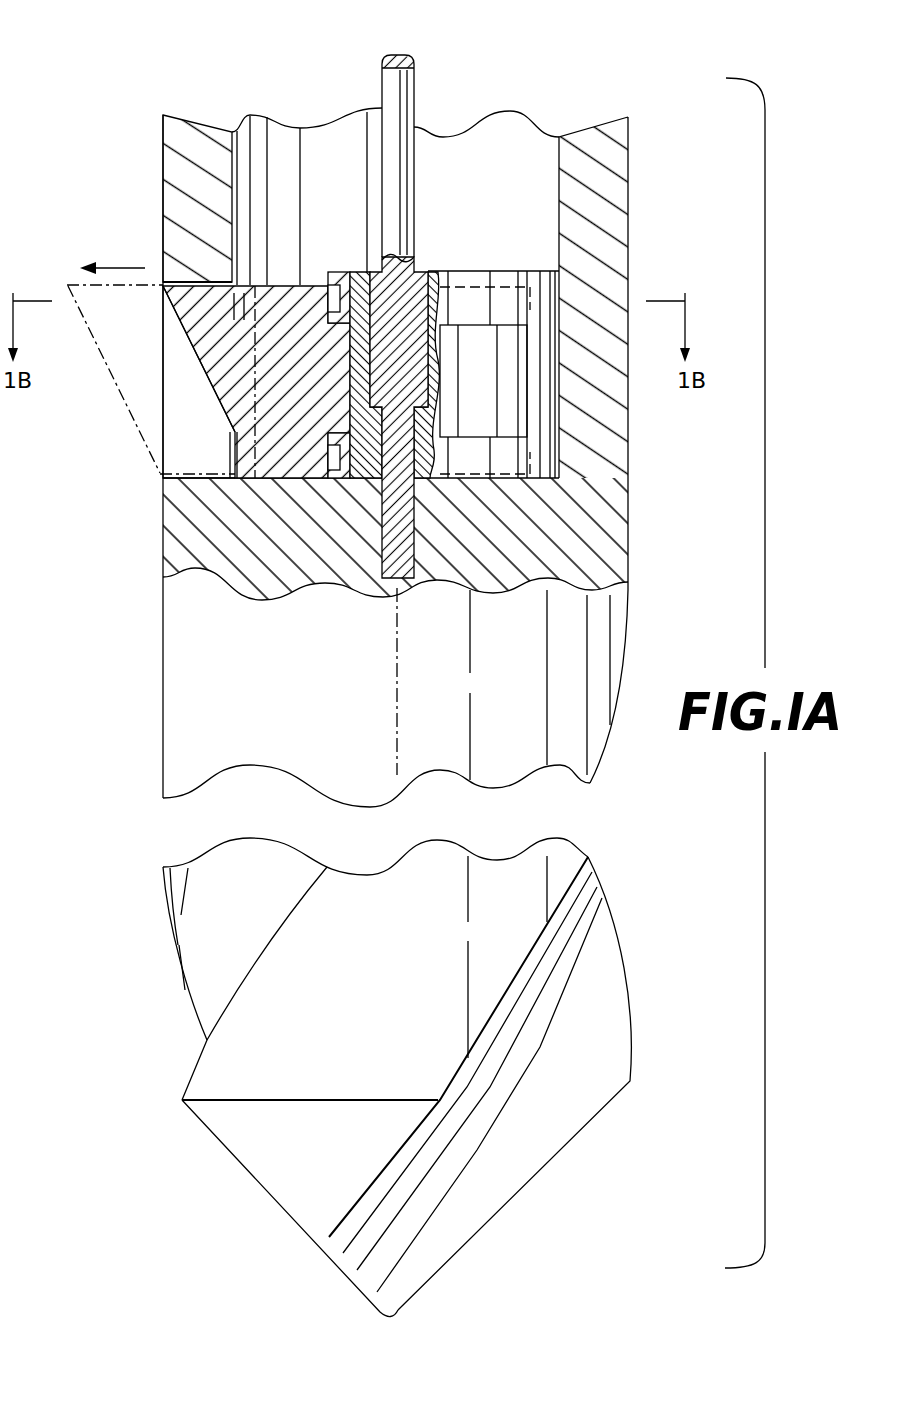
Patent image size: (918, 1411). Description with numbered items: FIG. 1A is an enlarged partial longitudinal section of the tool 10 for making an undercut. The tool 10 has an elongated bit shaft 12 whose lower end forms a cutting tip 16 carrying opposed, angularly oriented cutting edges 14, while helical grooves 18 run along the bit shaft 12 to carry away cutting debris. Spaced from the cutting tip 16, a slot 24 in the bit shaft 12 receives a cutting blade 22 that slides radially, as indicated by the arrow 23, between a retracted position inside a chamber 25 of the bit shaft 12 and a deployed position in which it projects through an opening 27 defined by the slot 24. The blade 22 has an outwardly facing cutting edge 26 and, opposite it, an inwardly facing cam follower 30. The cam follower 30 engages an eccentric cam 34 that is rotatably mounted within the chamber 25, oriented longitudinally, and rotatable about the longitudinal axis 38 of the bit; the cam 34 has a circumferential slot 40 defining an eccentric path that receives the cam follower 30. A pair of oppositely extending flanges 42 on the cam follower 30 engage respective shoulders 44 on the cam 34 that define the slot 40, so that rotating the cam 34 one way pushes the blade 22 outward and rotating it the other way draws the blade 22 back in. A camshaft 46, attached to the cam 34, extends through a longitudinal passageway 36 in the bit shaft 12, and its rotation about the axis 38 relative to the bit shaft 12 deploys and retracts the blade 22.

The tool 10 is at (678, 549).
The bit shaft 12 is at (452, 677).
The cutting edges 14 is at (505, 1202).
The cutting tip 16 is at (380, 1323).
The helical grooves 18 is at (207, 955).
The cutting blade 22 is at (218, 382).
The arrow 23 is at (117, 268).
The slot 24 is at (168, 348).
The chamber 25 is at (257, 183).
The cutting edge 26 is at (193, 363).
The opening 27 is at (163, 282).
The cam follower 30 is at (350, 392).
The eccentric cam 34 is at (457, 271).
The longitudinal passageway 36 is at (517, 123).
The longitudinal axis 38 is at (397, 697).
The circumferential slot 40 is at (480, 355).
The flanges 42 is at (360, 282).
The shoulders 44 is at (332, 303).
The camshaft 46 is at (382, 88).